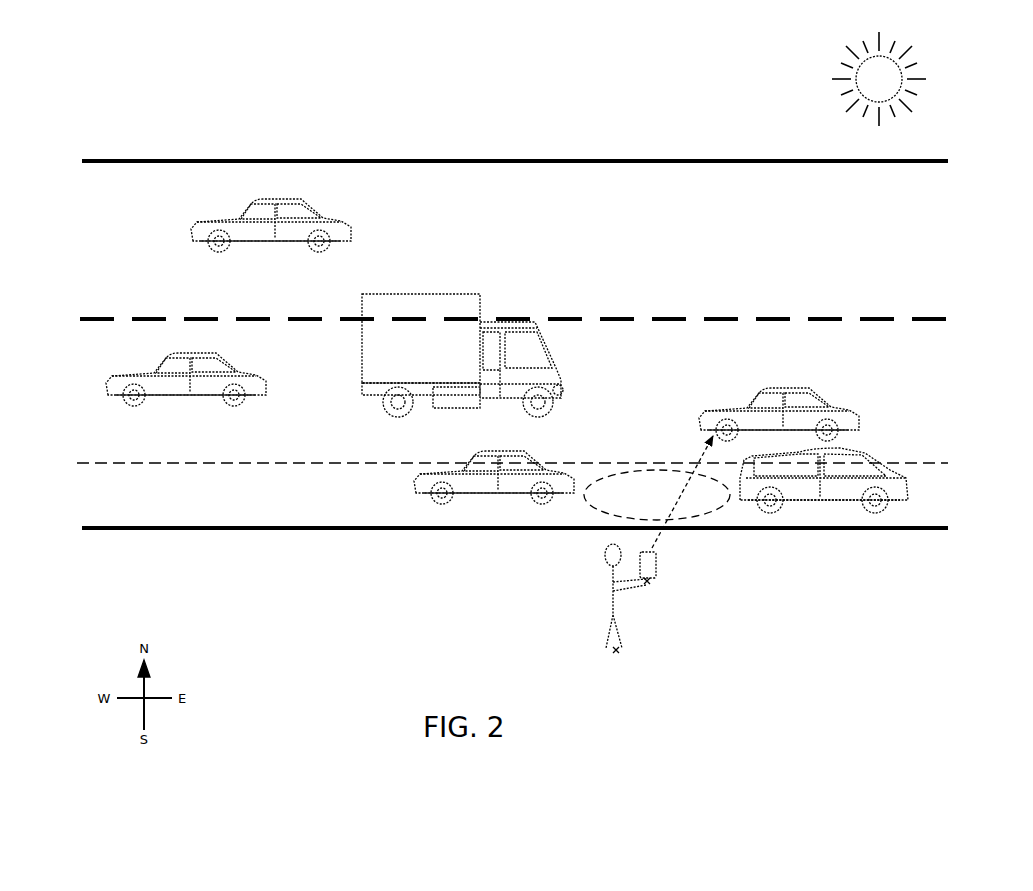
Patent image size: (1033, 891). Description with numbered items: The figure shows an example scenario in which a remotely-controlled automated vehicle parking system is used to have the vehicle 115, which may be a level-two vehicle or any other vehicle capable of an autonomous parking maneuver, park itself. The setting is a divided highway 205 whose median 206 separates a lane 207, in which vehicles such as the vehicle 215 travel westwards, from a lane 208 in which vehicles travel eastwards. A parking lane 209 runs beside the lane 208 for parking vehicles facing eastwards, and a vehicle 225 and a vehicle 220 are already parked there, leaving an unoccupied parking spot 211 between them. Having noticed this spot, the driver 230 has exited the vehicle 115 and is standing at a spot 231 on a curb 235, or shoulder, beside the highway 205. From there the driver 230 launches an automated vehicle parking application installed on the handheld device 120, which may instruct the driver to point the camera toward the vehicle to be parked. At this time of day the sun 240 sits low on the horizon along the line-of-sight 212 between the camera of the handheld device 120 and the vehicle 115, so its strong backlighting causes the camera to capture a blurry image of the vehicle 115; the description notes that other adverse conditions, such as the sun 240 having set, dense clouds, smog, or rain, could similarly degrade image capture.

The highway 205 is at (446, 138).
The median 206 is at (622, 318).
The lane 207 is at (66, 240).
The lane 208 is at (72, 408).
The parking lane 209 is at (70, 492).
The curb 235 is at (77, 562).
The vehicle 215 is at (364, 213).
The vehicle 220 is at (417, 455).
The vehicle 115 is at (713, 394).
The vehicle 225 is at (896, 461).
The unoccupied parking spot 211 is at (613, 472).
The line-of-sight 212 is at (658, 547).
The driver 230 is at (594, 571).
The handheld device 120 is at (652, 584).
The spot 231 is at (618, 655).
The sun 240 is at (822, 55).